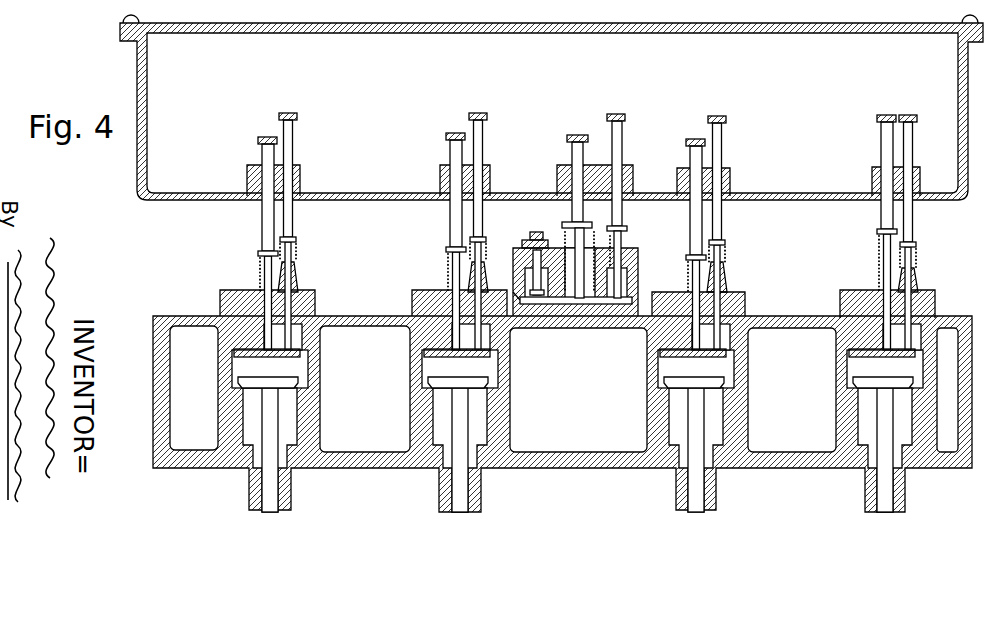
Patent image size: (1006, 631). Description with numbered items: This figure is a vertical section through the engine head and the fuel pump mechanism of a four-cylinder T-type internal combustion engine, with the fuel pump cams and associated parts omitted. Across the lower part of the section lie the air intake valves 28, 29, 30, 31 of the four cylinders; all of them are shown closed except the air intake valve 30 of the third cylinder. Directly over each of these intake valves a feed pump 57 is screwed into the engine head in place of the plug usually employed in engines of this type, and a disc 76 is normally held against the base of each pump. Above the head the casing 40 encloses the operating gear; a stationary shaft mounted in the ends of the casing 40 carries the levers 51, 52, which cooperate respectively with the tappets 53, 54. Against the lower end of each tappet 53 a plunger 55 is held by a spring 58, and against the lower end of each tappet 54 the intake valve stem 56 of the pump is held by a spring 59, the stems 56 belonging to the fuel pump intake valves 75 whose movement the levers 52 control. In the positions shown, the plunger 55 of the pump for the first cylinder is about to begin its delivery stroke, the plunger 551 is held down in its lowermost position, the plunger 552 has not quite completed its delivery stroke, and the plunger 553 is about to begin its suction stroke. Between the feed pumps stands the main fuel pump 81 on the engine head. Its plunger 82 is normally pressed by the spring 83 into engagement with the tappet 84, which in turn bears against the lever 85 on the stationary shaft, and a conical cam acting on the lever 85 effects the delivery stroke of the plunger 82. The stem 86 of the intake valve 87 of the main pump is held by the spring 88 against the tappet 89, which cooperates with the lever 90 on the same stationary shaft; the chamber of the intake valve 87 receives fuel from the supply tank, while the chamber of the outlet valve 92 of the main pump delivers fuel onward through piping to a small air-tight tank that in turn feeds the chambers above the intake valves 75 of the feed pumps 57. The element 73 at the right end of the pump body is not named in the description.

The air intake valve 28 is at (860, 388).
The air intake valve 29 is at (666, 386).
The air intake valve 30 is at (432, 385).
The air intake valve 31 is at (250, 385).
The casing 40 is at (968, 130).
The lever 51 is at (263, 138).
The lever 52 is at (297, 115).
The tappet 53 is at (264, 155).
The tappet 54 is at (292, 150).
The plunger 55 is at (880, 272).
The plunger 551 is at (689, 272).
The plunger 552 is at (447, 272).
The plunger 553 is at (258, 272).
The intake valve stem 56 is at (290, 282).
The fuel pump 57 is at (410, 293).
The spring 58 is at (260, 252).
The spring 59 is at (296, 253).
The body end wall 73 is at (940, 350).
The fuel pump intake valve 75 is at (300, 352).
The disc 76 is at (268, 374).
The main fuel pump 81 is at (638, 262).
The plunger 82 is at (581, 240).
The spring 83 is at (563, 232).
The tappet 84 is at (572, 153).
The lever 85 is at (575, 136).
The intake valve stem 86 is at (622, 238).
The intake valve 87 is at (632, 300).
The spring 88 is at (614, 250).
The tappet 89 is at (620, 150).
The lever 90 is at (618, 116).
The outlet valve 92 is at (515, 292).